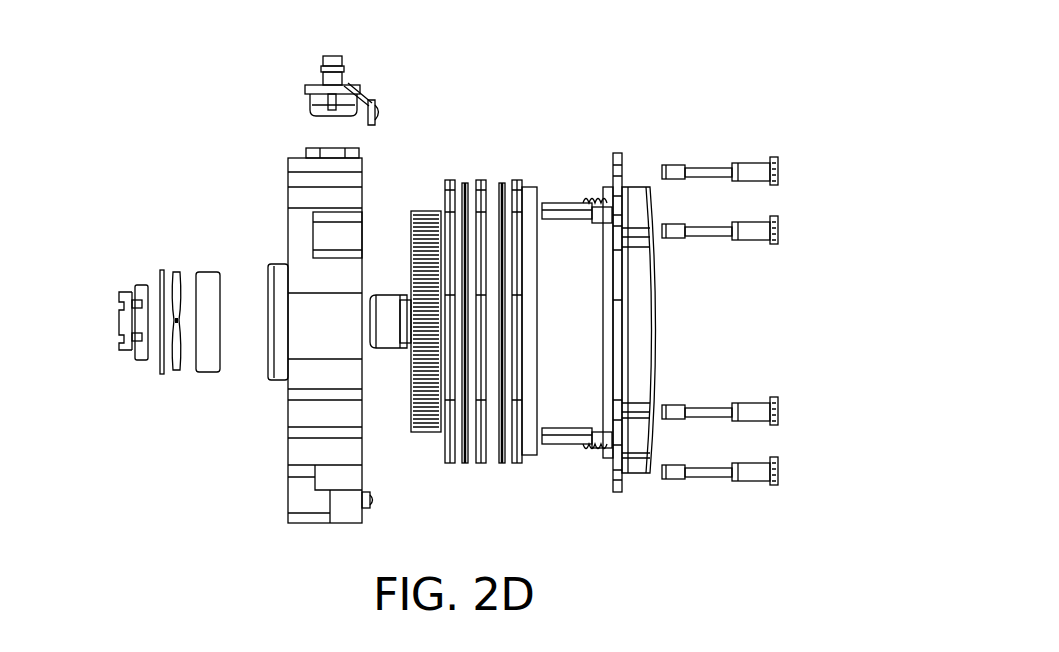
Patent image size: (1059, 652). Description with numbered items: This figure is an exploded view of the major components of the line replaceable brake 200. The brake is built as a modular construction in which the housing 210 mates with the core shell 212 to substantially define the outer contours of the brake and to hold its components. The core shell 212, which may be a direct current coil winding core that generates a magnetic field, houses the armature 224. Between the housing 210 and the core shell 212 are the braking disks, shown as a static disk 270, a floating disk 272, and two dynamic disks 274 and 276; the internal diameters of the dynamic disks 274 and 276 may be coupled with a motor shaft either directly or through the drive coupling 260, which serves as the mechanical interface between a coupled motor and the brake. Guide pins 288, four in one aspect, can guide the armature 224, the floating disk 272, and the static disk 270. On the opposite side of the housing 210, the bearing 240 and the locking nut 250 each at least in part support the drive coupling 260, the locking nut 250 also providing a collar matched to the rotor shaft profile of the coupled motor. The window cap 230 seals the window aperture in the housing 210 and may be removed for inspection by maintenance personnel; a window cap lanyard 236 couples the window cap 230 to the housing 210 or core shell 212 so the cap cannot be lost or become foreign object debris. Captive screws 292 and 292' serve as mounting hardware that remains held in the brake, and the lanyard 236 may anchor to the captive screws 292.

The line replaceable brake 200 is at (791, 56).
The housing 210 is at (288, 182).
The core shell 212 is at (637, 468).
The armature 224 is at (527, 185).
The window cap 230 is at (305, 90).
The window cap lanyard 236 is at (378, 112).
The bearing 240 is at (208, 373).
The locking nut 250 is at (122, 352).
The drive coupling 260 is at (420, 435).
The static disk 270 is at (450, 465).
The floating disk 272 is at (483, 463).
The dynamic disk 274 is at (502, 183).
The dynamic disk 276 is at (468, 183).
The guide pin 288 is at (566, 200).
The captive screw 292 is at (720, 257).
The captive screw 292' is at (760, 336).